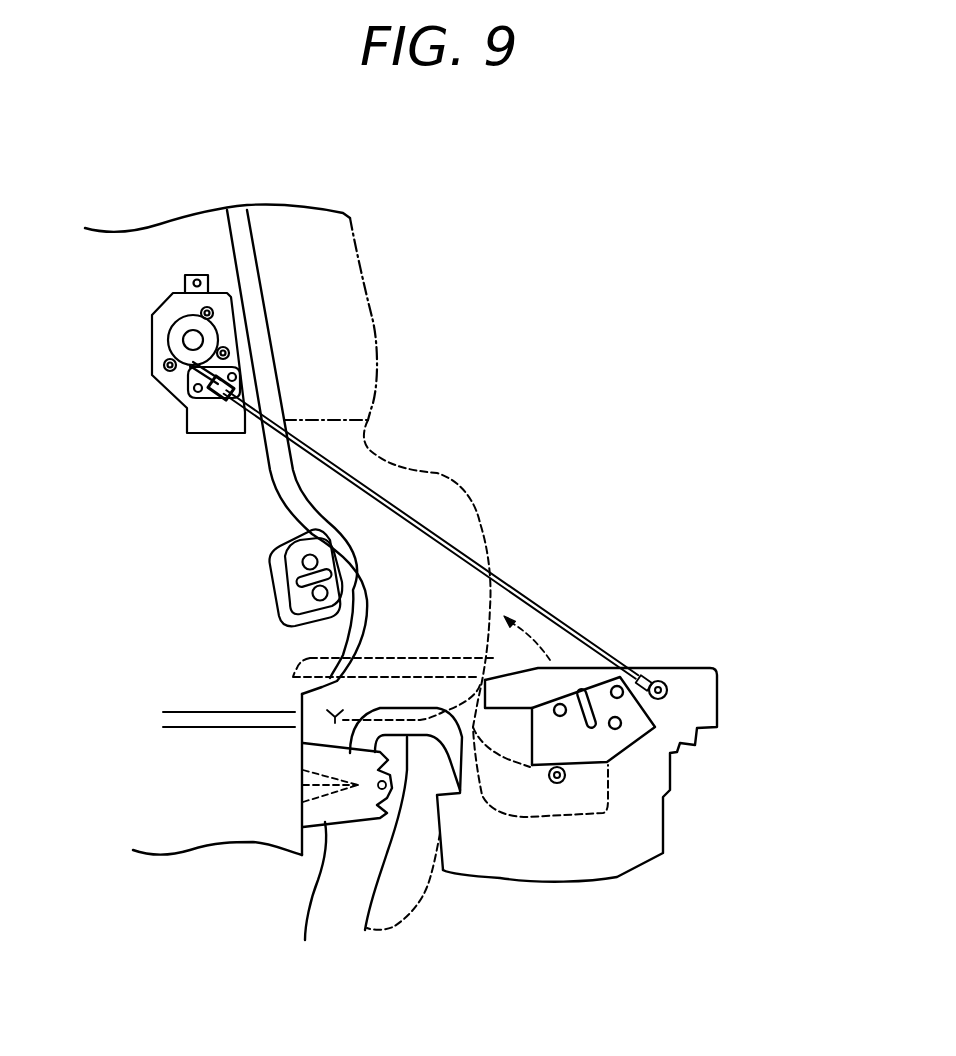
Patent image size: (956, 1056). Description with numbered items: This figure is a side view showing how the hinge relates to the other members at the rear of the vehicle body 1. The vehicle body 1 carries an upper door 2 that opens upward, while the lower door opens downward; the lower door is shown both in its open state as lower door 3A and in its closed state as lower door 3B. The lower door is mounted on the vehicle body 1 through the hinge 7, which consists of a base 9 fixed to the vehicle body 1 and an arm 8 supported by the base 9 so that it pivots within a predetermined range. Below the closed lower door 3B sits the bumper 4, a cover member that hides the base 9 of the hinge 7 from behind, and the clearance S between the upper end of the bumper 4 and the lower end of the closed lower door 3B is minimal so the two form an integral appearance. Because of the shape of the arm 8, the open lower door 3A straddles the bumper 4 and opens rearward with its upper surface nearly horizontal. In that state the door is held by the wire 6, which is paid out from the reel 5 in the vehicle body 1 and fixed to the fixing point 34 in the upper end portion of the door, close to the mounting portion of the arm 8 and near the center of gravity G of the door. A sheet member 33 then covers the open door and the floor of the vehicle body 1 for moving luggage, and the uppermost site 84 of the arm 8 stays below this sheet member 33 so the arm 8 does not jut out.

The vehicle body 1 is at (160, 281).
The upper door 2 is at (330, 262).
The lower door in the open state 3A is at (613, 863).
The lower door in the closed state 3B is at (430, 500).
The bumper 4 is at (408, 892).
The reel 5 is at (138, 361).
The wire 6 is at (517, 592).
The hinge 7 is at (387, 982).
The arm 8 is at (365, 930).
The base 9 is at (305, 940).
The sheet member 33 is at (297, 672).
The fixing point 34 is at (658, 680).
The uppermost site of the arm 84 is at (404, 716).
The center of gravity G is at (558, 783).
The clearance S is at (189, 675).